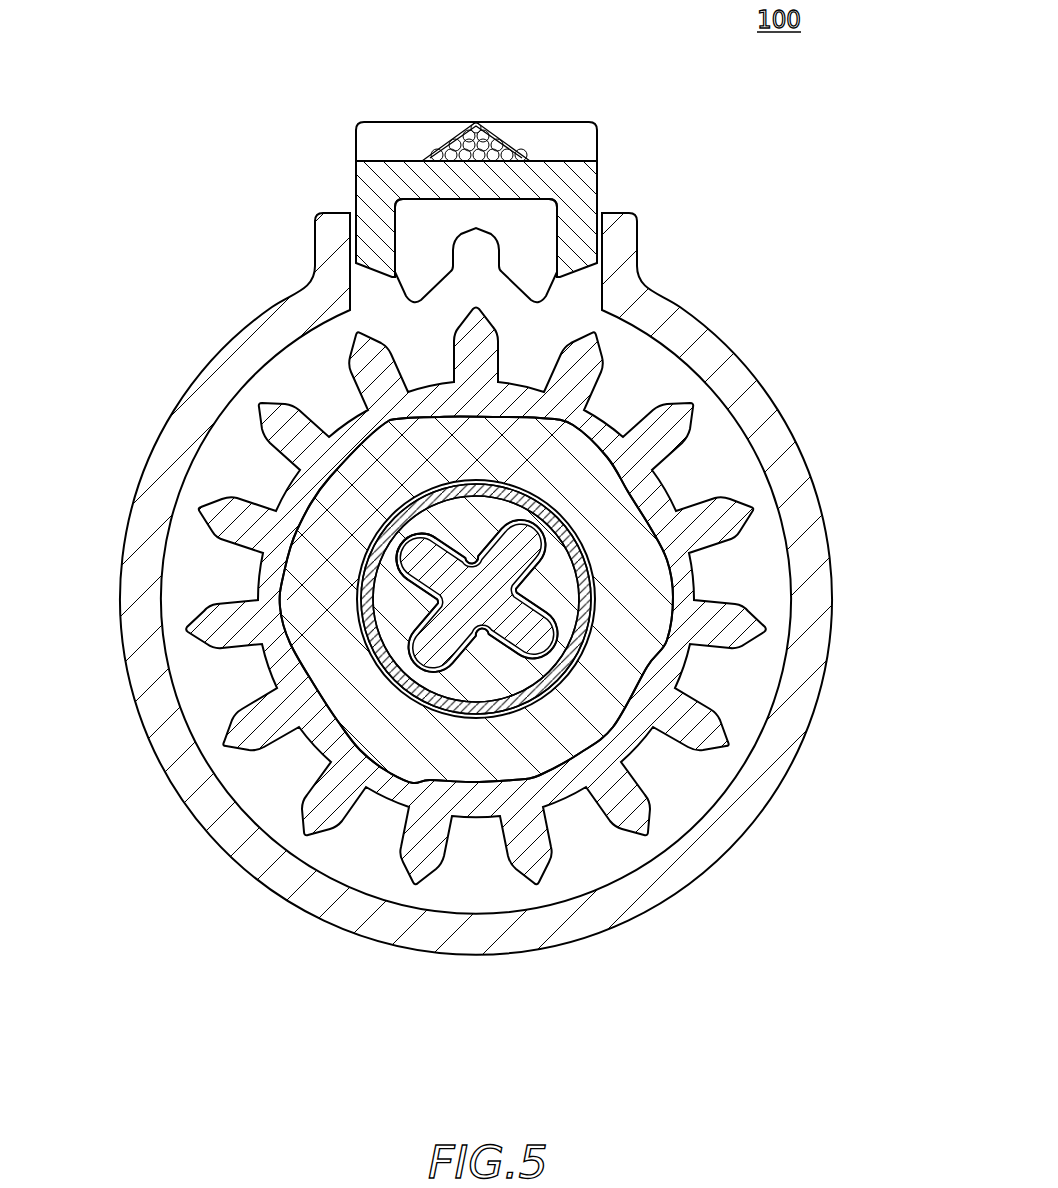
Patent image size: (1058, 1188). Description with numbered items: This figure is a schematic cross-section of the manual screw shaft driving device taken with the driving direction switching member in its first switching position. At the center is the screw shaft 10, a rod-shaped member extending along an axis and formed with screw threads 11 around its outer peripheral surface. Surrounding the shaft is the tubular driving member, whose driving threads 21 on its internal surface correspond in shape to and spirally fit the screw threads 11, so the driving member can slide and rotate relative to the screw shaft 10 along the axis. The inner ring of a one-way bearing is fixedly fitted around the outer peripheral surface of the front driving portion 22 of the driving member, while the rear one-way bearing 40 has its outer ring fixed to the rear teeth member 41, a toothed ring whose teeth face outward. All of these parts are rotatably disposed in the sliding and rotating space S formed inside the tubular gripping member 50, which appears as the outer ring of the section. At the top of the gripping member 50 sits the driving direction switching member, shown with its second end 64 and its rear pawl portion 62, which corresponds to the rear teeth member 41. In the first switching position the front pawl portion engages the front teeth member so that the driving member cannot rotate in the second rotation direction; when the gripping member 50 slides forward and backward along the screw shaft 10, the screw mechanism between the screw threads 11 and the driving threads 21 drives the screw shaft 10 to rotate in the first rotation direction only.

The second end 64 is at (548, 140).
The rear pawl portion 62 is at (417, 292).
The rear teeth member 41 is at (685, 427).
The rear one-way bearing 40 is at (602, 507).
The front driving portion 22 is at (557, 593).
The driving threads 21 is at (563, 633).
The screw threads 11 is at (432, 562).
The screw shaft 10 is at (443, 620).
The gripping member 50 is at (150, 707).
The sliding and rotating space S is at (472, 878).